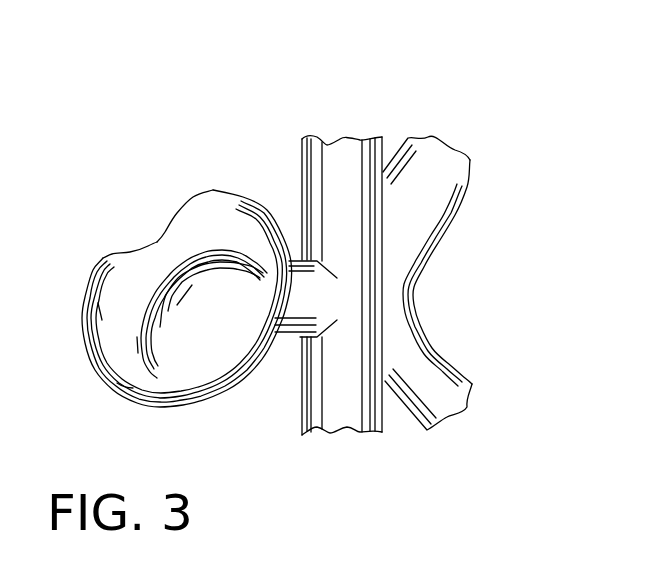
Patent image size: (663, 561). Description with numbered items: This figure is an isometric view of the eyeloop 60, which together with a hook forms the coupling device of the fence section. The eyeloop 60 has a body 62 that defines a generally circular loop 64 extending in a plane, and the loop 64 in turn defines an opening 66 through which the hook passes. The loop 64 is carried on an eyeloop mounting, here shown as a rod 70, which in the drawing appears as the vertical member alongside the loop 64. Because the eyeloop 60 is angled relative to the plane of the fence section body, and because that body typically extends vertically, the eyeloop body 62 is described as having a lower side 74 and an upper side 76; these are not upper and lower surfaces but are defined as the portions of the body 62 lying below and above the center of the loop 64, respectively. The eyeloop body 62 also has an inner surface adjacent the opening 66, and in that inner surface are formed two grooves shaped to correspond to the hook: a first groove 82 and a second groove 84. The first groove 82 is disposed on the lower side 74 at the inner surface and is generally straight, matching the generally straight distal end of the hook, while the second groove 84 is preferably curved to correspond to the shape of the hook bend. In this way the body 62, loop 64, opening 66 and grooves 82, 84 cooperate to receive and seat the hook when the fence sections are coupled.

The eyeloop 60 is at (235, 124).
The eyeloop body 62 is at (240, 212).
The loop 64 is at (110, 372).
The opening 66 is at (180, 298).
The rod 70 is at (318, 302).
The lower side 74 is at (218, 365).
The upper side 76 is at (197, 200).
The first groove 82 is at (186, 378).
The second groove 84 is at (158, 242).